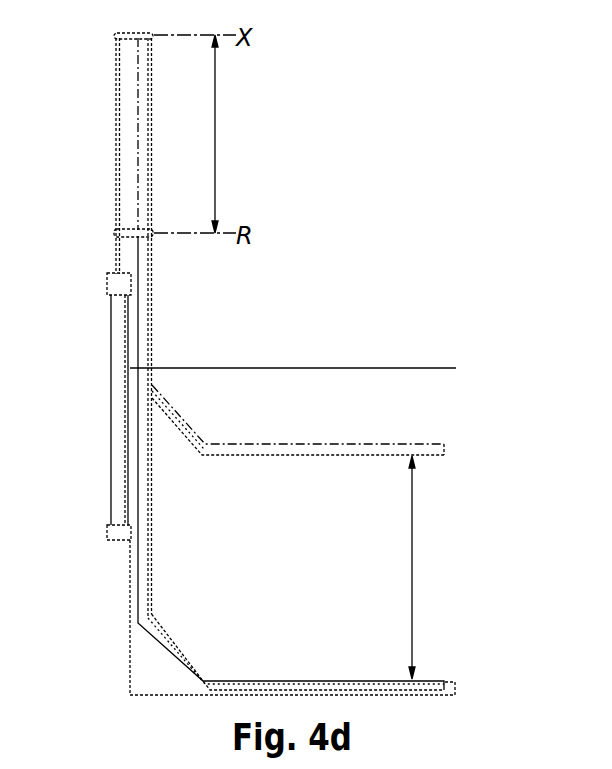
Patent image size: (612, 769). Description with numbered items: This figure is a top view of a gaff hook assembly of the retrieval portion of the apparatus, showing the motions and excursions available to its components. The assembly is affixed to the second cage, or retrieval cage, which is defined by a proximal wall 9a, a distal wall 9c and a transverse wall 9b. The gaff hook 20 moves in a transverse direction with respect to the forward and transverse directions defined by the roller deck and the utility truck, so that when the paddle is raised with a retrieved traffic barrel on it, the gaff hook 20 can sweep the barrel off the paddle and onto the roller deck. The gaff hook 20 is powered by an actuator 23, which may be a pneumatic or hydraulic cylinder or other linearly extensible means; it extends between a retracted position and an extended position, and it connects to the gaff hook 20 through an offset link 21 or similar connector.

The offset link 21 is at (128, 231).
The actuator 23 is at (110, 322).
The proximal wall 9a is at (348, 368).
The gaff hook 20 is at (278, 681).
The transverse wall 9b is at (130, 648).
The distal wall 9c is at (455, 694).